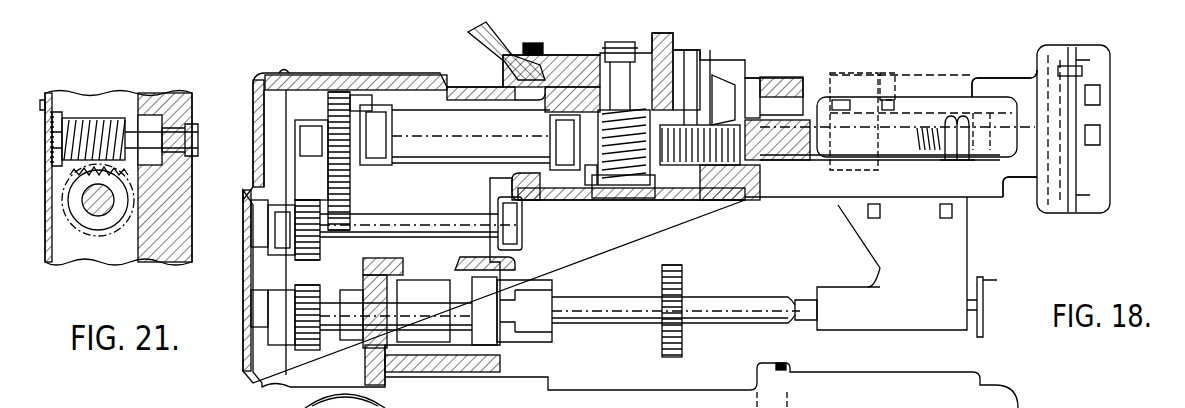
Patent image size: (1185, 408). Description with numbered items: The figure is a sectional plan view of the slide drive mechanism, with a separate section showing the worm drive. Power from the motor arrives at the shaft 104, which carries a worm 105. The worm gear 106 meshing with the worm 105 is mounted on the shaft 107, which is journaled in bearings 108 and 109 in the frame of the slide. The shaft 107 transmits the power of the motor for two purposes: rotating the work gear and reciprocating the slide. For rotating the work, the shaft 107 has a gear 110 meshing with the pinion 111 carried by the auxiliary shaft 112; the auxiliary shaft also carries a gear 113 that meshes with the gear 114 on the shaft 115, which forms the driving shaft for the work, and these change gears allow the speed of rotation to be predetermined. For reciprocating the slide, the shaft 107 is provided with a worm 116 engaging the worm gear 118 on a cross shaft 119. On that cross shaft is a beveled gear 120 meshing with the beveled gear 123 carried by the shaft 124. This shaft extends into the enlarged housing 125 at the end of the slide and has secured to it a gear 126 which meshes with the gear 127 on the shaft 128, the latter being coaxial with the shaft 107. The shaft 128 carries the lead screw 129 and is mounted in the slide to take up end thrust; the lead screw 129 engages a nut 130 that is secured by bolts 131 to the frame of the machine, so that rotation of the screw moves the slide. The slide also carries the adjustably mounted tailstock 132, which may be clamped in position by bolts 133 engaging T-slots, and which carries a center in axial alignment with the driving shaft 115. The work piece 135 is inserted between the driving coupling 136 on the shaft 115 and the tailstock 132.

In FIG. 21, the shaft 104 is at (198, 128).
In FIG. 18, the shaft 104 is at (612, 48).
In FIG. 21, the worm 105 is at (95, 120).
In FIG. 18, the worm 105 is at (632, 165).
In FIG. 21, the worm gear 106 is at (110, 210).
In FIG. 18, the worm gear 106 is at (590, 195).
In FIG. 21, the shaft 107 is at (100, 218).
In FIG. 18, the shaft 107 is at (470, 140).
In FIG. 18, the bearing 108 is at (566, 128).
In FIG. 18, the bearing 109 is at (380, 123).
In FIG. 18, the gear 110 is at (340, 100).
In FIG. 18, the pinion 111 is at (345, 248).
In FIG. 18, the auxiliary shaft 112 is at (420, 222).
In FIG. 18, the gear 113 is at (248, 263).
In FIG. 18, the gear 114 is at (313, 342).
In FIG. 18, the shaft 115 is at (408, 302).
In FIG. 18, the worm 116 is at (738, 182).
In FIG. 18, the worm gear 118 is at (664, 165).
In FIG. 18, the cross shaft 119 is at (690, 95).
In FIG. 18, the beveled gear 120 is at (722, 90).
In FIG. 18, the beveled gear 123 is at (755, 80).
In FIG. 18, the shaft 124 is at (783, 95).
In FIG. 18, the enlarged housing 125 is at (1033, 63).
In FIG. 18, the gear 126 is at (1070, 70).
In FIG. 18, the gear 127 is at (1072, 172).
In FIG. 18, the shaft 128 is at (1022, 162).
In FIG. 18, the lead screw 129 is at (812, 165).
In FIG. 18, the nut 130 is at (833, 200).
In FIG. 18, the bolts 131 is at (888, 85).
In FIG. 18, the tailstock 132 is at (948, 240).
In FIG. 18, the bolts 133 is at (874, 214).
In FIG. 18, the work piece 135 is at (684, 270).
In FIG. 18, the driving coupling 136 is at (518, 287).